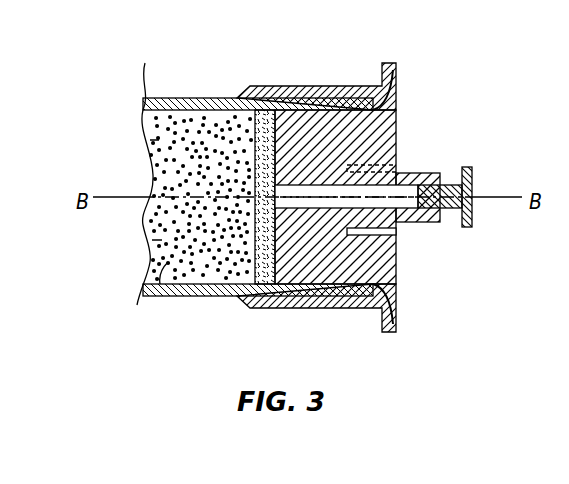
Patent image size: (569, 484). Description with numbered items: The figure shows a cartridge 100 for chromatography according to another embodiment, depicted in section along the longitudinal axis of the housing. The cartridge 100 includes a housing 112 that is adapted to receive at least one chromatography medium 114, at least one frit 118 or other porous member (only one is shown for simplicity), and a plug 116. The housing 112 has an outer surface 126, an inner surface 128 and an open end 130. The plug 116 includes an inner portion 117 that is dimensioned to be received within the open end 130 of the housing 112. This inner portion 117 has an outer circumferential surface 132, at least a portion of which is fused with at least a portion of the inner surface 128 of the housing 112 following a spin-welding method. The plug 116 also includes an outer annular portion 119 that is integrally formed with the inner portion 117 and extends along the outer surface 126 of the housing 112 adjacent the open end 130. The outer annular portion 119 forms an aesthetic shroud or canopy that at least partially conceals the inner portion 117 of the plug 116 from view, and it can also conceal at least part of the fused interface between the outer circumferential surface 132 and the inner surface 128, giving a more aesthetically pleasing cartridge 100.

The cartridge 100 is at (310, 207).
The housing 112 is at (245, 214).
The chromatography medium 114 is at (163, 297).
The plug 116 is at (366, 201).
The inner portion 117 is at (395, 247).
The frit 118 is at (262, 302).
The outer annular portion 119 is at (355, 86).
The outer surface 126 is at (185, 99).
The inner surface 128 is at (143, 100).
The open end 130 is at (397, 90).
The outer circumferential surface 132 is at (383, 282).